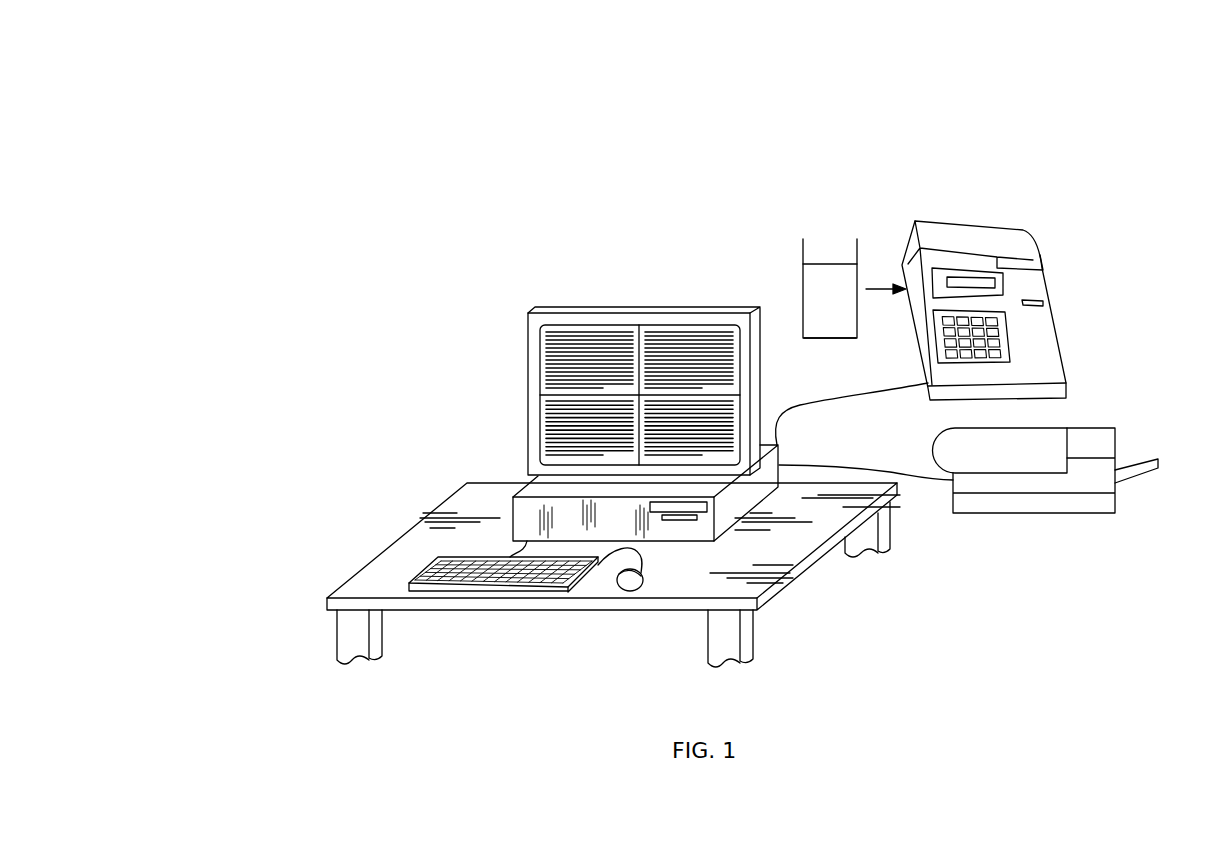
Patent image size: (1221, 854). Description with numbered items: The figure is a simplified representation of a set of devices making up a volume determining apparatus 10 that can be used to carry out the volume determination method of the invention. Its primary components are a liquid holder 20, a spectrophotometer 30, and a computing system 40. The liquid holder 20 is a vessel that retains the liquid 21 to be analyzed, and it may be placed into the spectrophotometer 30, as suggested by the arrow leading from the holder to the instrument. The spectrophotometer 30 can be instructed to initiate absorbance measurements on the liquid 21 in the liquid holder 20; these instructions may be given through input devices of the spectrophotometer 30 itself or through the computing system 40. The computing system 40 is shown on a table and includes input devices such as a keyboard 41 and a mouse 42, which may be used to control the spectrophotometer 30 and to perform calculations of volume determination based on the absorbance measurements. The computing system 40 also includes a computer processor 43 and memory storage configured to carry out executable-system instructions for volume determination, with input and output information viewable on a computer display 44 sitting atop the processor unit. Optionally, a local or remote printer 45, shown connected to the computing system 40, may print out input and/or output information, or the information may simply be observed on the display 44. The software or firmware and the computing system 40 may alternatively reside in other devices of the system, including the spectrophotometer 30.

The volume determining apparatus 10 is at (281, 90).
The liquid holder 20 is at (803, 262).
The liquid 21 is at (812, 306).
The spectrophotometer 30 is at (1048, 328).
The computing system 40 is at (400, 424).
The keyboard 41 is at (430, 560).
The mouse 42 is at (617, 590).
The computer processor 43 is at (522, 495).
The computer display 44 is at (652, 328).
The printer 45 is at (1117, 500).